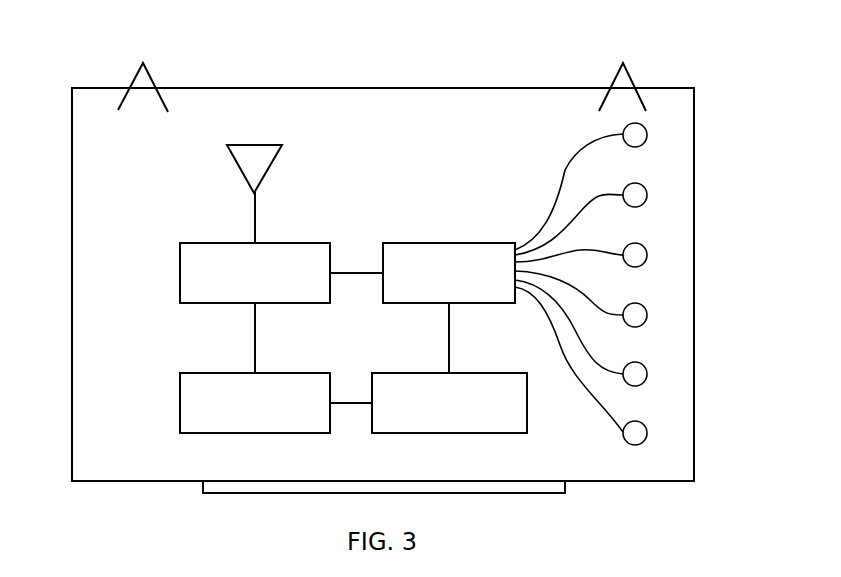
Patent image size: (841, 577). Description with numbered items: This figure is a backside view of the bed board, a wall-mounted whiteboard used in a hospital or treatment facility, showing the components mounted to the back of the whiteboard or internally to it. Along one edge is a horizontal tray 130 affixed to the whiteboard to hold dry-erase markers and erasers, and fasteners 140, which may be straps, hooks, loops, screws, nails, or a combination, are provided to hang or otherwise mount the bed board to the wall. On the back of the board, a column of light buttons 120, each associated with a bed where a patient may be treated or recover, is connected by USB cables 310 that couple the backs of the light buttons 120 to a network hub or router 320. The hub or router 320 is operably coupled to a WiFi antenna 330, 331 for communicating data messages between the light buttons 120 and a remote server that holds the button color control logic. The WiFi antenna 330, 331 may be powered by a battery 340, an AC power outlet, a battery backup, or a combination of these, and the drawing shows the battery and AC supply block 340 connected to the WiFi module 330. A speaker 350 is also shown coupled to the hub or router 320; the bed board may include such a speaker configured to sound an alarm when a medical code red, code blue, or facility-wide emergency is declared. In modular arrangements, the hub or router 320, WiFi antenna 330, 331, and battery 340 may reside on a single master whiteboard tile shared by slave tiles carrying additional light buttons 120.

The light buttons 120 is at (636, 136).
The horizontal tray 130 is at (552, 498).
The fasteners 140 is at (155, 68).
The USB cables 310 is at (562, 160).
The network hub or router 320 is at (422, 242).
The WiFi antenna 330 is at (287, 242).
The WiFi antenna 331 is at (252, 145).
The battery 340 is at (300, 372).
The speaker 350 is at (467, 372).